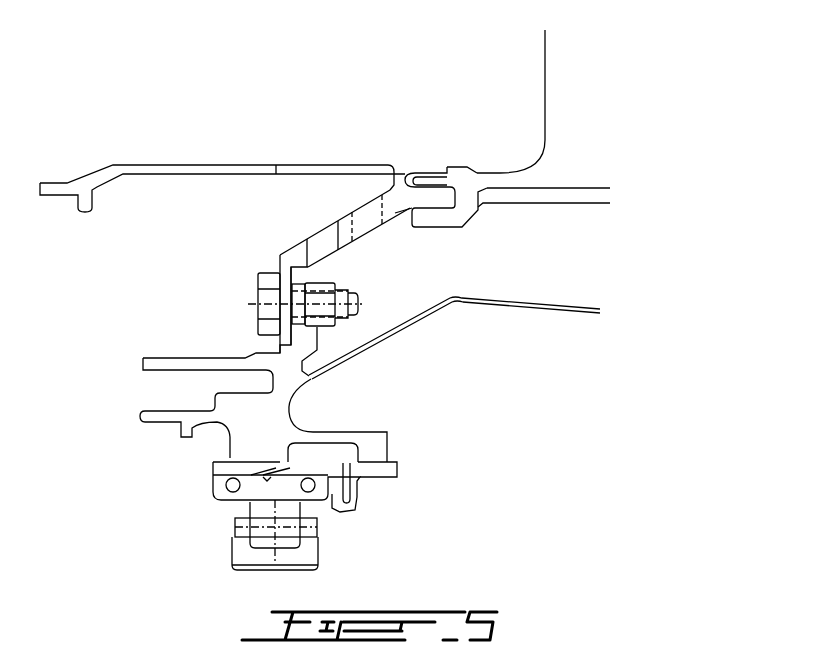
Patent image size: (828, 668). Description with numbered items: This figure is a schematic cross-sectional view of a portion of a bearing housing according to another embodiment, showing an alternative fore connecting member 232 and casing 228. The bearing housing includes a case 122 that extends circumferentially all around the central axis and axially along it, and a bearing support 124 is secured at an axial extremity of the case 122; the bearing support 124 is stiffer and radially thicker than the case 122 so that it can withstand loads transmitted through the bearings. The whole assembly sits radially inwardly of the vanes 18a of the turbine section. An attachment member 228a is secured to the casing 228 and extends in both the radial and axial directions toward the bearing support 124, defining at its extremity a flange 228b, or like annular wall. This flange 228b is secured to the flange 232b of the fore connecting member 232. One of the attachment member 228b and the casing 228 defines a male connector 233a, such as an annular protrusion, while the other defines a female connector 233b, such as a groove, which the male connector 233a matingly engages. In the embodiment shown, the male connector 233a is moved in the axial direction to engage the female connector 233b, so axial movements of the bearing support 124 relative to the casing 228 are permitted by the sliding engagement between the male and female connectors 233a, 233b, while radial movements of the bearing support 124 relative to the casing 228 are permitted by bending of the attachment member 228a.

The vanes 18a is at (545, 75).
The case 122 is at (577, 308).
The bearing support 124 is at (224, 436).
The casing 228 is at (335, 167).
The attachment member 228a is at (363, 228).
The flange 228b is at (282, 254).
The fore connecting member 232 is at (283, 208).
The flange of the fore connecting member 232b is at (343, 327).
The male connector 233a is at (438, 198).
The female connector 233b is at (480, 201).